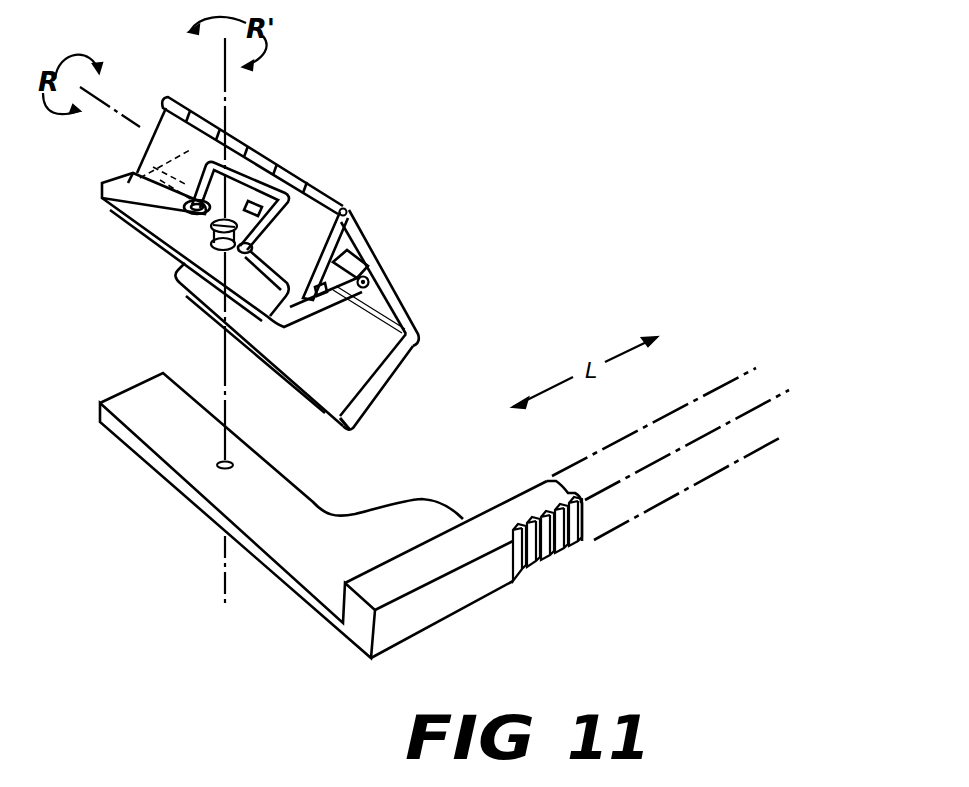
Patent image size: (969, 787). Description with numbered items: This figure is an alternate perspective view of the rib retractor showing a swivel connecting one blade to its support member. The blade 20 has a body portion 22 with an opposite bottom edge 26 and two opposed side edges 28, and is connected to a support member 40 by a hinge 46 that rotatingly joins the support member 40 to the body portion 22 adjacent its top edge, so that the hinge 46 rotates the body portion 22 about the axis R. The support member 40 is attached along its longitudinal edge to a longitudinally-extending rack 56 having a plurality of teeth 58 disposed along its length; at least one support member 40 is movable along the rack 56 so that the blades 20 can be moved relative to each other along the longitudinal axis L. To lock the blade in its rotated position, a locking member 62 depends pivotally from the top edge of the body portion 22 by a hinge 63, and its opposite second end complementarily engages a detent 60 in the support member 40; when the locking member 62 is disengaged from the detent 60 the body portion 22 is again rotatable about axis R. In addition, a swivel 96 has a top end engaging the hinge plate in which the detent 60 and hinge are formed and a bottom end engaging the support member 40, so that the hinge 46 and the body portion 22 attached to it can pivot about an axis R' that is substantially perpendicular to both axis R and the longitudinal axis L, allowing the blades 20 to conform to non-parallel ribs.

The blade 20 is at (402, 297).
The body portion 22 is at (207, 295).
The bottom edge 26 is at (342, 425).
The side edges 28 is at (373, 357).
The support member 40 is at (310, 575).
The hinge 46 is at (369, 281).
The rack 56 is at (525, 505).
The teeth 58 is at (542, 565).
The detent 60 is at (180, 205).
The locking member 62 is at (148, 157).
The hinge 63 is at (323, 183).
The swivel 96 is at (210, 222).